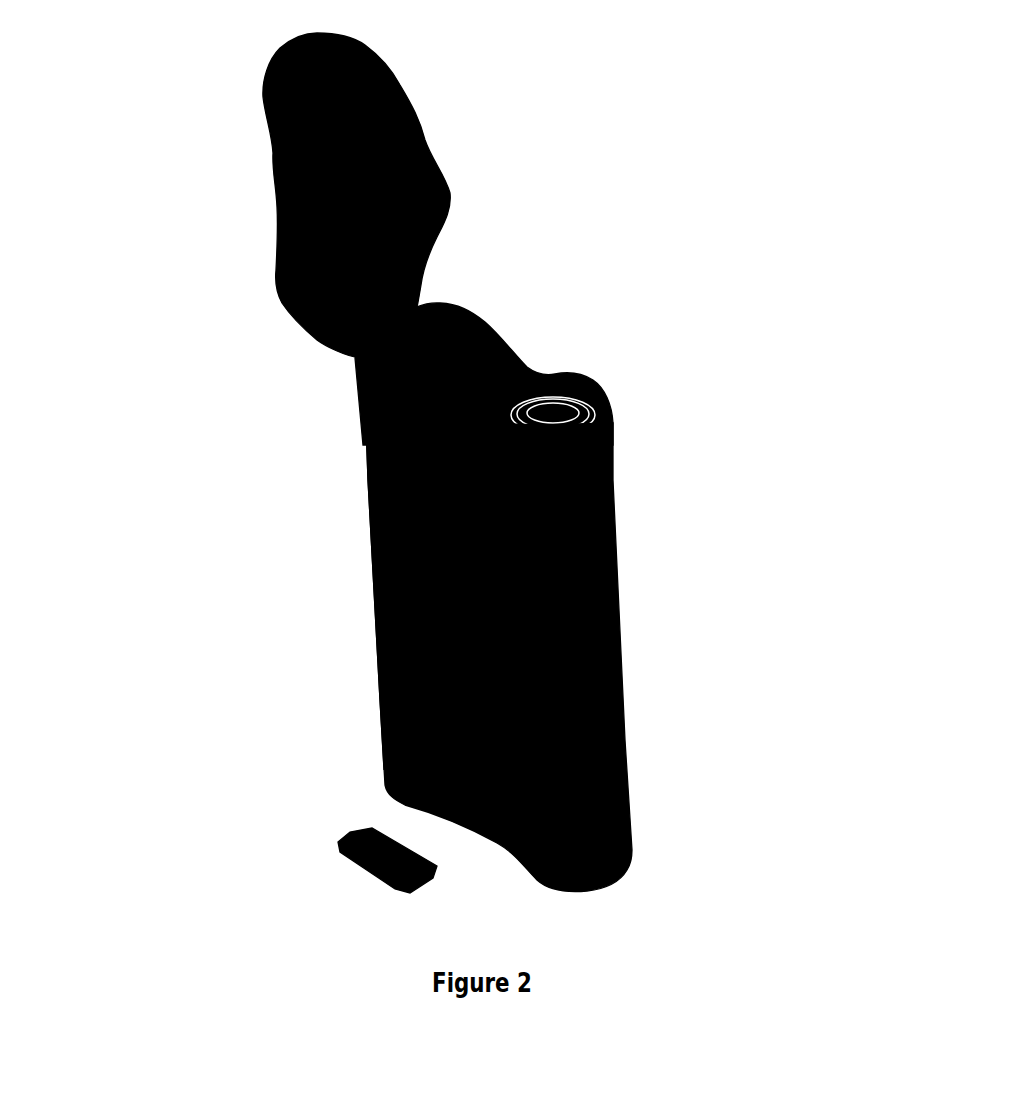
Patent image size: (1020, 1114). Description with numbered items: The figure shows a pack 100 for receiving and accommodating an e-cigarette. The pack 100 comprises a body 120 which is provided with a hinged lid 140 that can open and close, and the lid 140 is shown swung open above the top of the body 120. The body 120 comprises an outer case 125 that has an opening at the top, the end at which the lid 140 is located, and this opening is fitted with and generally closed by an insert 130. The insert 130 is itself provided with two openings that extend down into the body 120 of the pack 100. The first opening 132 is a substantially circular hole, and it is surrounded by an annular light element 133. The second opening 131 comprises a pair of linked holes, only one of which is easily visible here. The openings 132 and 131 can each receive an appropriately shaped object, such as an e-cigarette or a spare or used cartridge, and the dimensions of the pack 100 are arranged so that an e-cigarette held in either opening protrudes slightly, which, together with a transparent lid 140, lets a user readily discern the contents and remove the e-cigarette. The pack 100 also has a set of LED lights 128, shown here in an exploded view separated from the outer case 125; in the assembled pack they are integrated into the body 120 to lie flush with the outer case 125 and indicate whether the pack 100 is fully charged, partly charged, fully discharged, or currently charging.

The pack 100 is at (477, 471).
The body 120 is at (490, 618).
The outer case 125 is at (355, 542).
The LED lights 128 is at (363, 870).
The insert 130 is at (457, 338).
The second opening 131 is at (480, 367).
The first opening 132 is at (552, 410).
The annular light element 133 is at (583, 395).
The hinged lid 140 is at (462, 187).